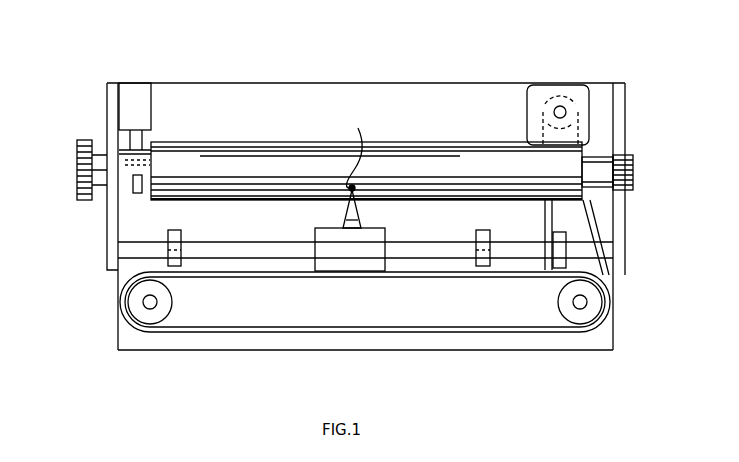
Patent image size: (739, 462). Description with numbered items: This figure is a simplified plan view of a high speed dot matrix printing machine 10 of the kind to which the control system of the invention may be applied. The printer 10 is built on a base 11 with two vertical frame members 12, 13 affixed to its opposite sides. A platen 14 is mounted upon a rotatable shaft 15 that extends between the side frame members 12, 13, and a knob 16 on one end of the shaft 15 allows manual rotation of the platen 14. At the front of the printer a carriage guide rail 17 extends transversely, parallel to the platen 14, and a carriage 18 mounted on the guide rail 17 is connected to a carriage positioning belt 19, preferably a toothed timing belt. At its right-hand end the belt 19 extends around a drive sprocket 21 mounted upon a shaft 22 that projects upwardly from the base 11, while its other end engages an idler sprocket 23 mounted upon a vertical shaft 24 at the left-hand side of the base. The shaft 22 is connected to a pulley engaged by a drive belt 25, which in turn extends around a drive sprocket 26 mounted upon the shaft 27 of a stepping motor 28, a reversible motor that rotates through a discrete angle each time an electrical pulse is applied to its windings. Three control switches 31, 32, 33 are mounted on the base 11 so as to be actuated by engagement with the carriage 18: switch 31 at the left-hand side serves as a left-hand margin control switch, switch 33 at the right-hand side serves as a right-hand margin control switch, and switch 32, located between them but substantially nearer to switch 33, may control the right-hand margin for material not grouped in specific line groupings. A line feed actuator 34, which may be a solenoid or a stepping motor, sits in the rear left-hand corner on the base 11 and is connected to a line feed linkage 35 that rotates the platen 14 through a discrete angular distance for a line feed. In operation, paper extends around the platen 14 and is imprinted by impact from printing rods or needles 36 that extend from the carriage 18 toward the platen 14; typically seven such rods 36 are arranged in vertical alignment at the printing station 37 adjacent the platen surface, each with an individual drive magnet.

The high speed printing machine 10 is at (571, 358).
The base 11 is at (412, 88).
The vertical frame member 12 is at (618, 114).
The vertical frame member 13 is at (107, 240).
The platen 14 is at (262, 157).
The rotatable shaft 15 is at (603, 170).
The knob 16 is at (77, 155).
The carriage guide rail 17 is at (240, 242).
The carriage 18 is at (362, 260).
The carriage positioning belt 19 is at (240, 285).
The drive sprocket 21 is at (587, 292).
The shaft 22 is at (588, 304).
The idler sprocket 23 is at (130, 300).
The vertical shaft 24 is at (151, 310).
The drive belt 25 is at (600, 225).
The drive sprocket 26 is at (580, 90).
The shaft 27 is at (560, 105).
The stepping motor 28 is at (527, 118).
The control switch 31 is at (173, 232).
The control switch 32 is at (480, 230).
The control switch 33 is at (550, 235).
The line feed actuator 34 is at (132, 93).
The line feed linkage 35 is at (122, 142).
The printing rods 36 is at (361, 222).
The printing station 37 is at (357, 148).